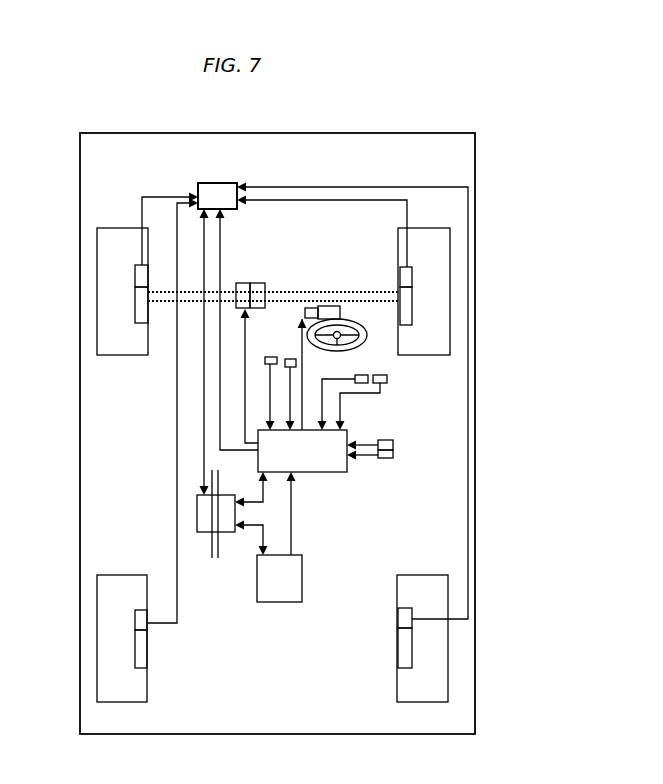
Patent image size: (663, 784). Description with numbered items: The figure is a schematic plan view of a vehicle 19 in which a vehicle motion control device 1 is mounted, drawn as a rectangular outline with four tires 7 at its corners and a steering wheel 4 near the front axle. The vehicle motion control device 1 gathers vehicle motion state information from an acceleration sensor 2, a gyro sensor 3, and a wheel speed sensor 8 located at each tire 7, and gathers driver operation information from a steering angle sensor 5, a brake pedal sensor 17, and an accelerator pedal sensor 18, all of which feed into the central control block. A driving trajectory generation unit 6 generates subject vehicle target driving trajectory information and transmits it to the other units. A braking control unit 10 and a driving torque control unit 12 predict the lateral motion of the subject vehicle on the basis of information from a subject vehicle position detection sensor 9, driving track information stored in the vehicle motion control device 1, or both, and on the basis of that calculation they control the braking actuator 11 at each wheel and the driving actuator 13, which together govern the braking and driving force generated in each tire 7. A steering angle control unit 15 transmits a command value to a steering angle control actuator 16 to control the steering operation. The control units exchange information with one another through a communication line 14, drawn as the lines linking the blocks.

The vehicle motion control device 1 is at (337, 464).
The acceleration sensor 2 is at (393, 456).
The gyro sensor 3 is at (393, 445).
The steering wheel 4 is at (368, 332).
The steering angle sensor 5 is at (288, 359).
The driving trajectory generation unit 6 is at (267, 357).
The tire 7 is at (97, 295).
The wheel speed sensor 8 is at (140, 278).
The subject vehicle position detection sensor 9 is at (290, 595).
The braking control unit 10 is at (222, 187).
The braking actuator 11 is at (140, 310).
The driving torque control unit 12 is at (240, 283).
The driving actuator 13 is at (257, 290).
The communication line 14 is at (226, 528).
The steering angle control unit 15 is at (308, 312).
The steering angle control actuator 16 is at (330, 313).
The brake pedal sensor 17 is at (362, 375).
The accelerator pedal sensor 18 is at (387, 379).
The vehicle 19 is at (483, 193).